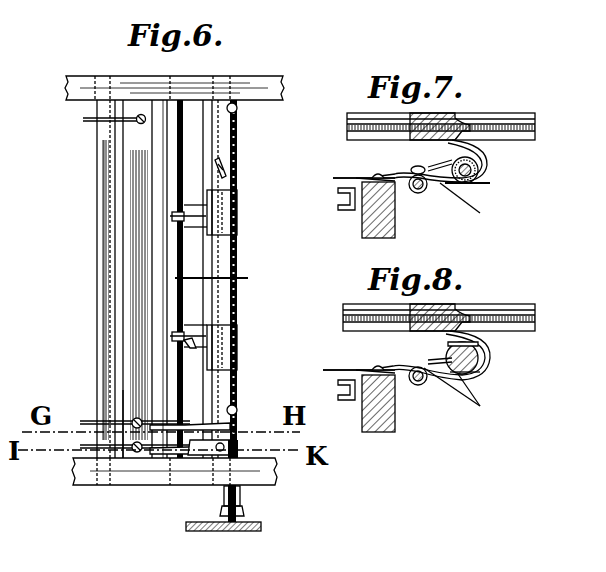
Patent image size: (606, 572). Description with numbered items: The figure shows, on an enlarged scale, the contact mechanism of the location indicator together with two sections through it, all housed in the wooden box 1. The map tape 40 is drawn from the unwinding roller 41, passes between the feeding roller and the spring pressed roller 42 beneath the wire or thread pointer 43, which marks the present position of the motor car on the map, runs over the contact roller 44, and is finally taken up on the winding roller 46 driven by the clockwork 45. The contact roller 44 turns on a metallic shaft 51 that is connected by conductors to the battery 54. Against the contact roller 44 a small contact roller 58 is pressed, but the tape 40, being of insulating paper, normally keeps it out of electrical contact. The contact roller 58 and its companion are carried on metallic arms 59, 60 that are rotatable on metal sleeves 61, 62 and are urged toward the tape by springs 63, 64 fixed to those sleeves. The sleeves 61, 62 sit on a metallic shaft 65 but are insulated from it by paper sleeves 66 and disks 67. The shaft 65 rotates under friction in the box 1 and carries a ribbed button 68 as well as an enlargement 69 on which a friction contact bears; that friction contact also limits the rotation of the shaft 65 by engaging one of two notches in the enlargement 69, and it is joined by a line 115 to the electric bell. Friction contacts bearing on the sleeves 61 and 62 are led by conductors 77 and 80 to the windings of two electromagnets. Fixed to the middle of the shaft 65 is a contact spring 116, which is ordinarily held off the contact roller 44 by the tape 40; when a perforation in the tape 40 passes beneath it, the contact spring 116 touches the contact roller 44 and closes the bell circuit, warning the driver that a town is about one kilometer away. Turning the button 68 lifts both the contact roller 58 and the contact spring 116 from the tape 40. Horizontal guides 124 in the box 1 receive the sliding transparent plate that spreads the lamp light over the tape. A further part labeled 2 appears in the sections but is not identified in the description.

In FIG. 6, the wooden box 1 is at (246, 84).
In FIG. 7, the rail 2 is at (497, 124).
In FIG. 8, the rail 2 is at (500, 315).
In FIG. 6, the tape 40 is at (163, 427).
In FIG. 7, the tape 40 is at (346, 176).
In FIG. 8, the tape 40 is at (412, 362).
In FIG. 6, the unwinding roller 41 is at (132, 343).
In FIG. 7, the unwinding roller 41 is at (370, 236).
In FIG. 8, the unwinding roller 41 is at (382, 432).
In FIG. 8, the spring pressed roller 42 is at (478, 344).
In FIG. 8, the pointer 43 is at (479, 366).
In FIG. 6, the contact roller 44 is at (180, 396).
In FIG. 7, the contact roller 44 is at (368, 177).
In FIG. 8, the contact roller 44 is at (482, 374).
In FIG. 6, the clockwork 45 is at (168, 440).
In FIG. 7, the clockwork 45 is at (400, 174).
In FIG. 8, the clockwork 45 is at (406, 355).
In FIG. 6, the winding roller 46 is at (162, 122).
In FIG. 6, the metallic shaft 51 is at (182, 82).
In FIG. 7, the metallic shaft 51 is at (416, 194).
In FIG. 8, the metallic shaft 51 is at (416, 386).
In FIG. 6, the battery 54 is at (190, 348).
In FIG. 7, the battery 54 is at (415, 168).
In FIG. 6, the contact roller 58 is at (190, 210).
In FIG. 6, the metallic arm 59 is at (198, 332).
In FIG. 7, the metallic arm 59 is at (444, 170).
In FIG. 8, the metallic arm 59 is at (444, 364).
In FIG. 6, the metallic arm 60 is at (200, 251).
In FIG. 6, the metal sleeve 61 is at (240, 392).
In FIG. 7, the metal sleeve 61 is at (478, 164).
In FIG. 6, the metal sleeve 62 is at (238, 172).
In FIG. 6, the spring 63 is at (238, 356).
In FIG. 6, the spring 64 is at (238, 204).
In FIG. 6, the metallic shaft 65 is at (240, 301).
In FIG. 7, the metallic shaft 65 is at (470, 184).
In FIG. 6, the insulating sleeves 66 is at (238, 144).
In FIG. 7, the insulating sleeves 66 is at (480, 172).
In FIG. 6, the insulating disks 67 is at (240, 107).
In FIG. 6, the ribbed button 68 is at (248, 532).
In FIG. 6, the enlargement 69 is at (248, 458).
In FIG. 8, the enlargement 69 is at (480, 406).
In FIG. 6, the conductor 77 is at (131, 422).
In FIG. 6, the conductor 80 is at (97, 122).
In FIG. 6, the line 115 is at (86, 456).
In FIG. 8, the line 115 is at (364, 369).
In FIG. 6, the contact spring 116 is at (243, 283).
In FIG. 7, the contact spring 116 is at (449, 140).
In FIG. 8, the contact spring 116 is at (481, 331).
In FIG. 6, the horizontal guides 124 is at (106, 327).
In FIG. 7, the horizontal guides 124 is at (343, 211).
In FIG. 8, the horizontal guides 124 is at (346, 390).